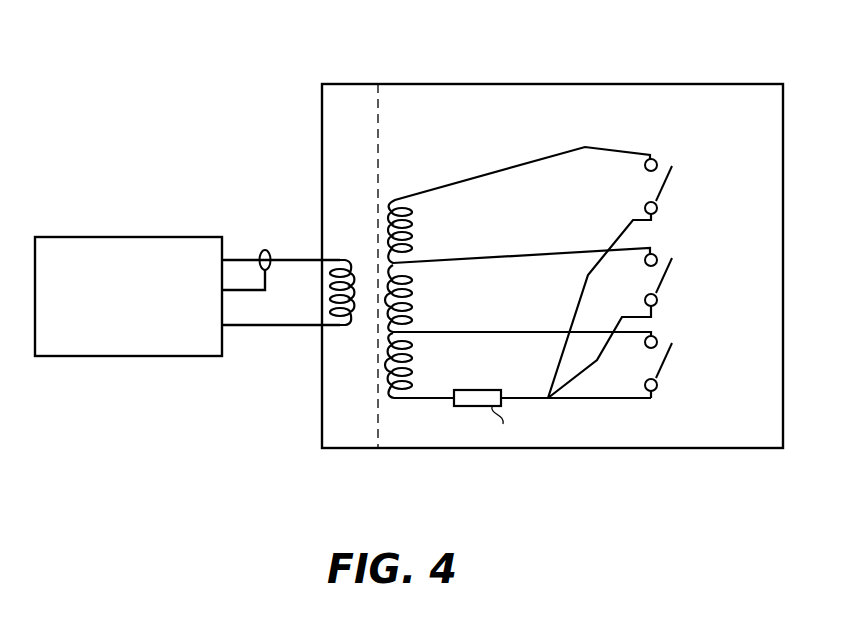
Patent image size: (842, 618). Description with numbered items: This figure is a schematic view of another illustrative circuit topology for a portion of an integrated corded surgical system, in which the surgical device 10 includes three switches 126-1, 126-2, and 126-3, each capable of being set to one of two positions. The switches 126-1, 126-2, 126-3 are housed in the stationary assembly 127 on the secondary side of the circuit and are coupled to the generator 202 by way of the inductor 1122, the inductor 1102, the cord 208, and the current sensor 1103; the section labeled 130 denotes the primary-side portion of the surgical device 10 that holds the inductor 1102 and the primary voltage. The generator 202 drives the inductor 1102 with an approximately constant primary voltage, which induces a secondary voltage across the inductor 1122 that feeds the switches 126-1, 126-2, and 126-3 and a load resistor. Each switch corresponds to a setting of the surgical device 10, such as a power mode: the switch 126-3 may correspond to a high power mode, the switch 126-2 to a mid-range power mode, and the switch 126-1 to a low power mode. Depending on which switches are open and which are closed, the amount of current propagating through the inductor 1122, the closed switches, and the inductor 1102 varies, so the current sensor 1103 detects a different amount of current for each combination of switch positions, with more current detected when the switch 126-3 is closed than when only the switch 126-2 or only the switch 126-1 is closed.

The surgical device 10 is at (705, 84).
The generator 202 is at (145, 323).
The cord 208 is at (292, 209).
The current sensor 1103 is at (265, 250).
The inductor 1102 is at (349, 245).
The primary side 130 is at (366, 112).
The stationary assembly 127 is at (420, 112).
The inductor 1122 is at (414, 400).
The switch 126-1 is at (659, 375).
The switch 126-2 is at (659, 290).
The switch 126-3 is at (659, 196).